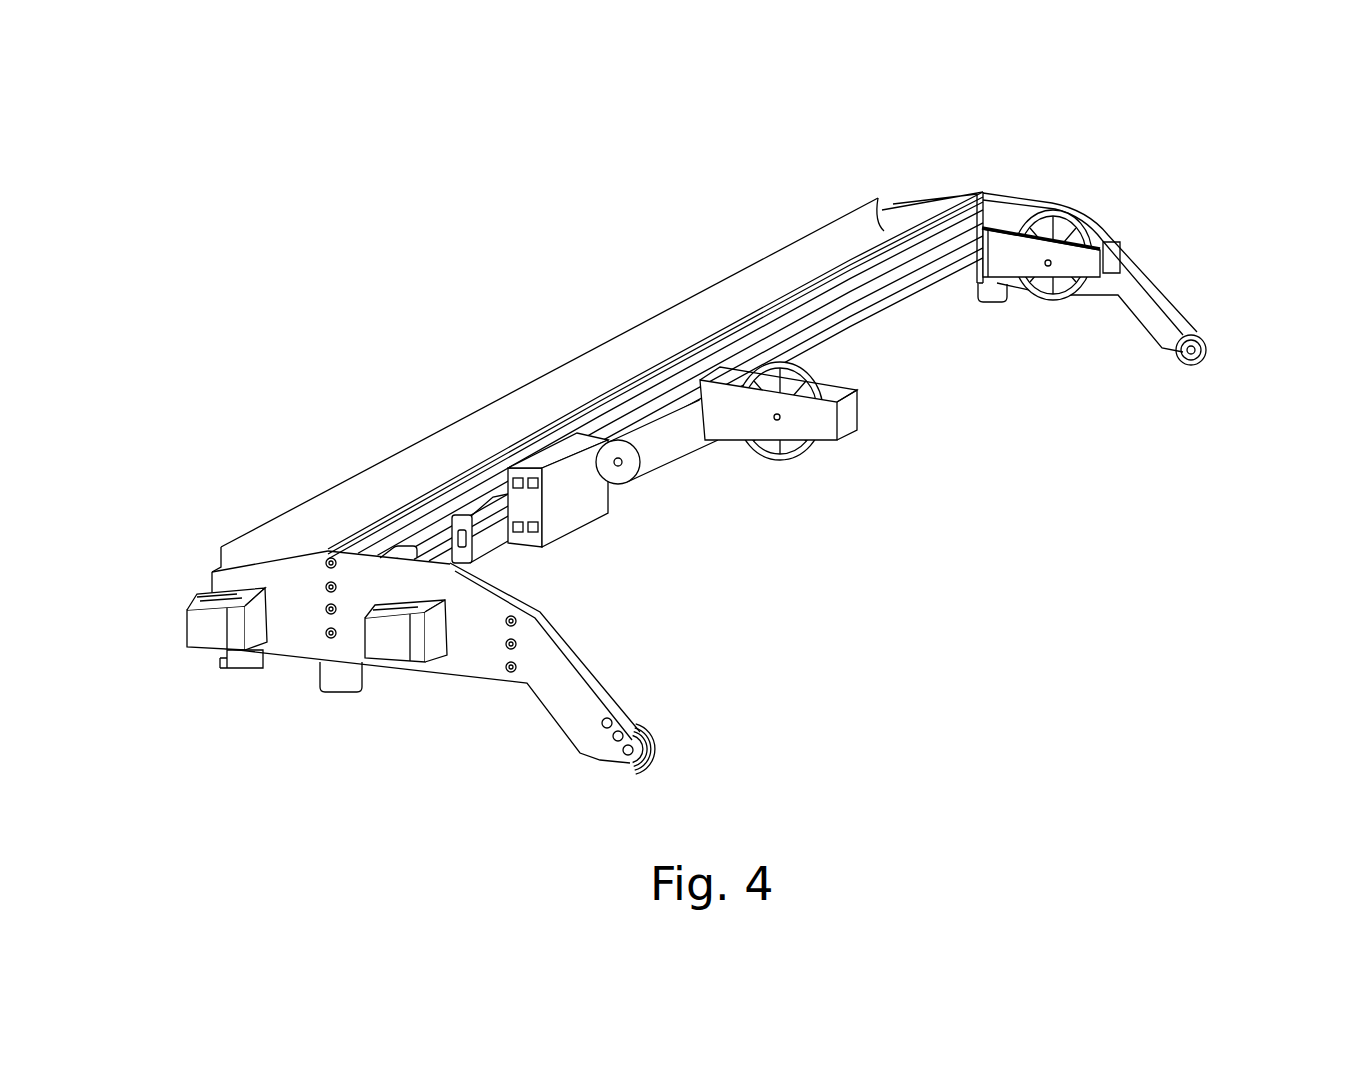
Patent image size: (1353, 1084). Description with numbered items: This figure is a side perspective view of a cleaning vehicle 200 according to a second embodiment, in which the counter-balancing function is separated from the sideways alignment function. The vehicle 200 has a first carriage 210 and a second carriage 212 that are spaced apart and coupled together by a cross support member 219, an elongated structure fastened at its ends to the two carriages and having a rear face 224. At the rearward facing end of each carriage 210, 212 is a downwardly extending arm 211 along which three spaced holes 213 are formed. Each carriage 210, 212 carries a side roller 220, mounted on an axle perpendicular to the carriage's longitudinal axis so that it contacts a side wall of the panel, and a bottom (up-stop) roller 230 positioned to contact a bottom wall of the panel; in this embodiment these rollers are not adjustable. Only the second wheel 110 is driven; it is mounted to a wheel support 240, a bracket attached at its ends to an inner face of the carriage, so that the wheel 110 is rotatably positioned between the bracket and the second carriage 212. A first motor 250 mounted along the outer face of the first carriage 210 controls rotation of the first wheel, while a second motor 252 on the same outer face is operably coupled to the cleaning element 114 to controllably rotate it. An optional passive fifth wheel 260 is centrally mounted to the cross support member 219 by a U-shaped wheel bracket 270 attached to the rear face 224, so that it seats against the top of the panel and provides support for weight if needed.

The vehicle 200 is at (549, 276).
The rear face 224 is at (930, 268).
The cleaning element 114 is at (365, 500).
The cross support member 219 is at (903, 320).
The fifth wheel 260 is at (800, 460).
The wheel bracket 270 is at (847, 427).
The first carriage 210 is at (465, 652).
The downwardly extending arm 211 is at (610, 708).
The holes 213 is at (620, 737).
The bottom roller 230 is at (660, 745).
The second carriage 212 is at (1022, 198).
The second wheel 110 is at (1075, 223).
The first wheel support 240 is at (1072, 267).
The side roller 220 is at (987, 297).
The second motor 252 is at (217, 632).
The first motor 250 is at (392, 640).